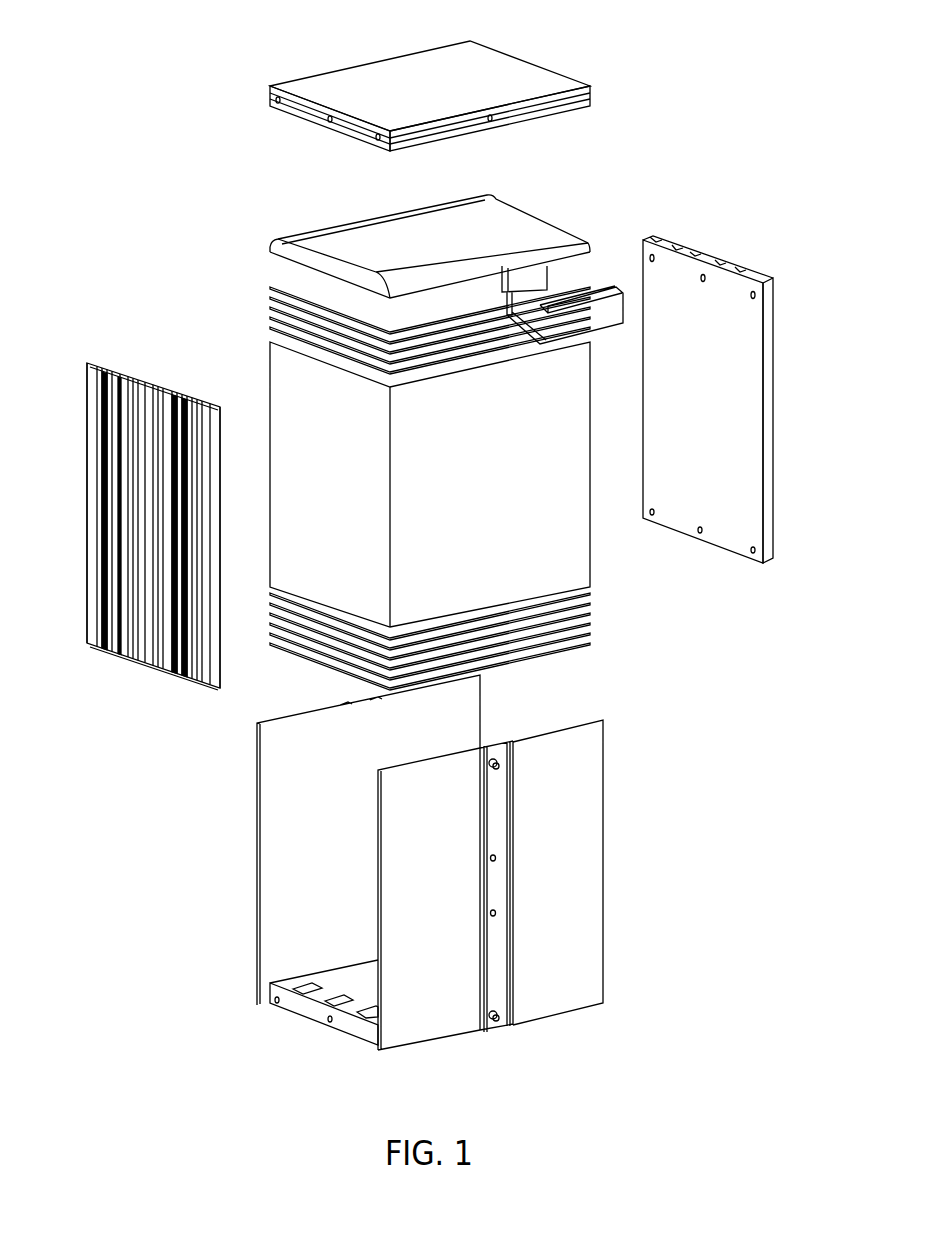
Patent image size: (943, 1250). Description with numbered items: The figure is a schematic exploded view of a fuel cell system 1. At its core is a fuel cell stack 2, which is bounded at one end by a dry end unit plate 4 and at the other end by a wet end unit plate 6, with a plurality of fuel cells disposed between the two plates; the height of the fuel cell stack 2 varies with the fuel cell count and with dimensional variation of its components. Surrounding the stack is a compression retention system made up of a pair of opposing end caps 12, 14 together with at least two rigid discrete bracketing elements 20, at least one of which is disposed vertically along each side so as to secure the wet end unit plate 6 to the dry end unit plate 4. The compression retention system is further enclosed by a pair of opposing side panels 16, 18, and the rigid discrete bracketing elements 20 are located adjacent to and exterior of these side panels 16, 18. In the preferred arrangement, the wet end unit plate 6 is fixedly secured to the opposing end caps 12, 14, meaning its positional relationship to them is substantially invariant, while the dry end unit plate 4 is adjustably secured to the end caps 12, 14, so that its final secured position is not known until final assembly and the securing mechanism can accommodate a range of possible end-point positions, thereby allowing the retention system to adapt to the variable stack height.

The fuel cell system 1 is at (152, 138).
The fuel cell stack 2 is at (586, 560).
The dry end unit plate 4 is at (398, 66).
The wet end unit plate 6 is at (302, 1010).
The end cap 12 is at (86, 497).
The end cap 14 is at (750, 420).
The side panel 16 is at (595, 823).
The side panel 18 is at (472, 712).
The rigid discrete bracketing element 20 is at (515, 928).